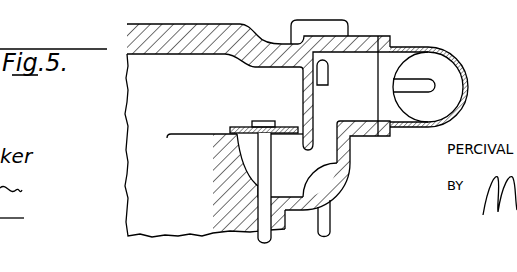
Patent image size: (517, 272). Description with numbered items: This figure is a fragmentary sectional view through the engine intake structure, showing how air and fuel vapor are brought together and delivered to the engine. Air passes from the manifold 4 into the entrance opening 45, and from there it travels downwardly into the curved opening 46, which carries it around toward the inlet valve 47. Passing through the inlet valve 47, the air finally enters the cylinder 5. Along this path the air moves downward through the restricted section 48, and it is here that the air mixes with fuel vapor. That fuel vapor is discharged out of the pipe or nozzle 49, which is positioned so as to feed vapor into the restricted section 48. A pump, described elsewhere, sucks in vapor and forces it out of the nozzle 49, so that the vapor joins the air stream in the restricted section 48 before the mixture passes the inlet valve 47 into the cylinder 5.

The manifold 4 is at (470, 95).
The cylinder 5 is at (240, 32).
The entrance opening 45 is at (357, 115).
The curved opening 46 is at (310, 185).
The inlet valve 47 is at (245, 130).
The restricted section 48 is at (352, 142).
The pipe or nozzle 49 is at (329, 80).